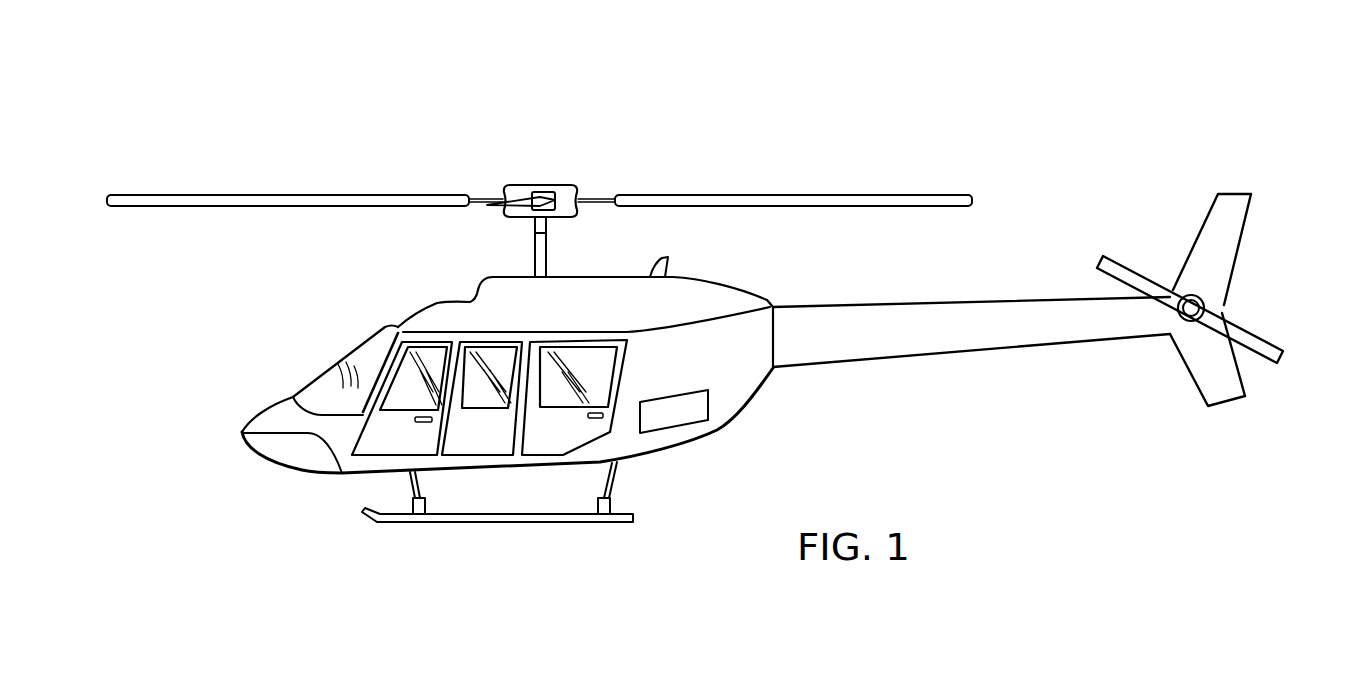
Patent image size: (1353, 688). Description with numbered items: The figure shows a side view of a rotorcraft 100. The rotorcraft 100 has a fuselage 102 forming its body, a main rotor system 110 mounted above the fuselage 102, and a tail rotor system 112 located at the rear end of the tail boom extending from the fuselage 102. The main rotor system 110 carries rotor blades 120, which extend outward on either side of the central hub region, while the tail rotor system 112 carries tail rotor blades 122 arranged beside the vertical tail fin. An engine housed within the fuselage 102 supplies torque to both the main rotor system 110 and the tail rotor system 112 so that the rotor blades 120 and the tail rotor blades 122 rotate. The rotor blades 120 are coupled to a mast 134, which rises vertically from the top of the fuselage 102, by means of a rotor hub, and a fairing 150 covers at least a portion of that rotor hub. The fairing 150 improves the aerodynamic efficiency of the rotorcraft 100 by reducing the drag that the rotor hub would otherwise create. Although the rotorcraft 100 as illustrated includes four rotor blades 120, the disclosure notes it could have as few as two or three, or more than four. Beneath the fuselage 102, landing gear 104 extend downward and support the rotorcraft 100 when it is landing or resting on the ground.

The rotorcraft 100 is at (383, 123).
The fuselage 102 is at (697, 446).
The landing gear 104 is at (483, 523).
The main rotor system 110 is at (565, 168).
The tail rotor system 112 is at (1273, 270).
The rotor blades 120 is at (853, 194).
The tail rotor blades 122 is at (1132, 268).
The mast 134 is at (532, 255).
The fairing 150 is at (518, 183).